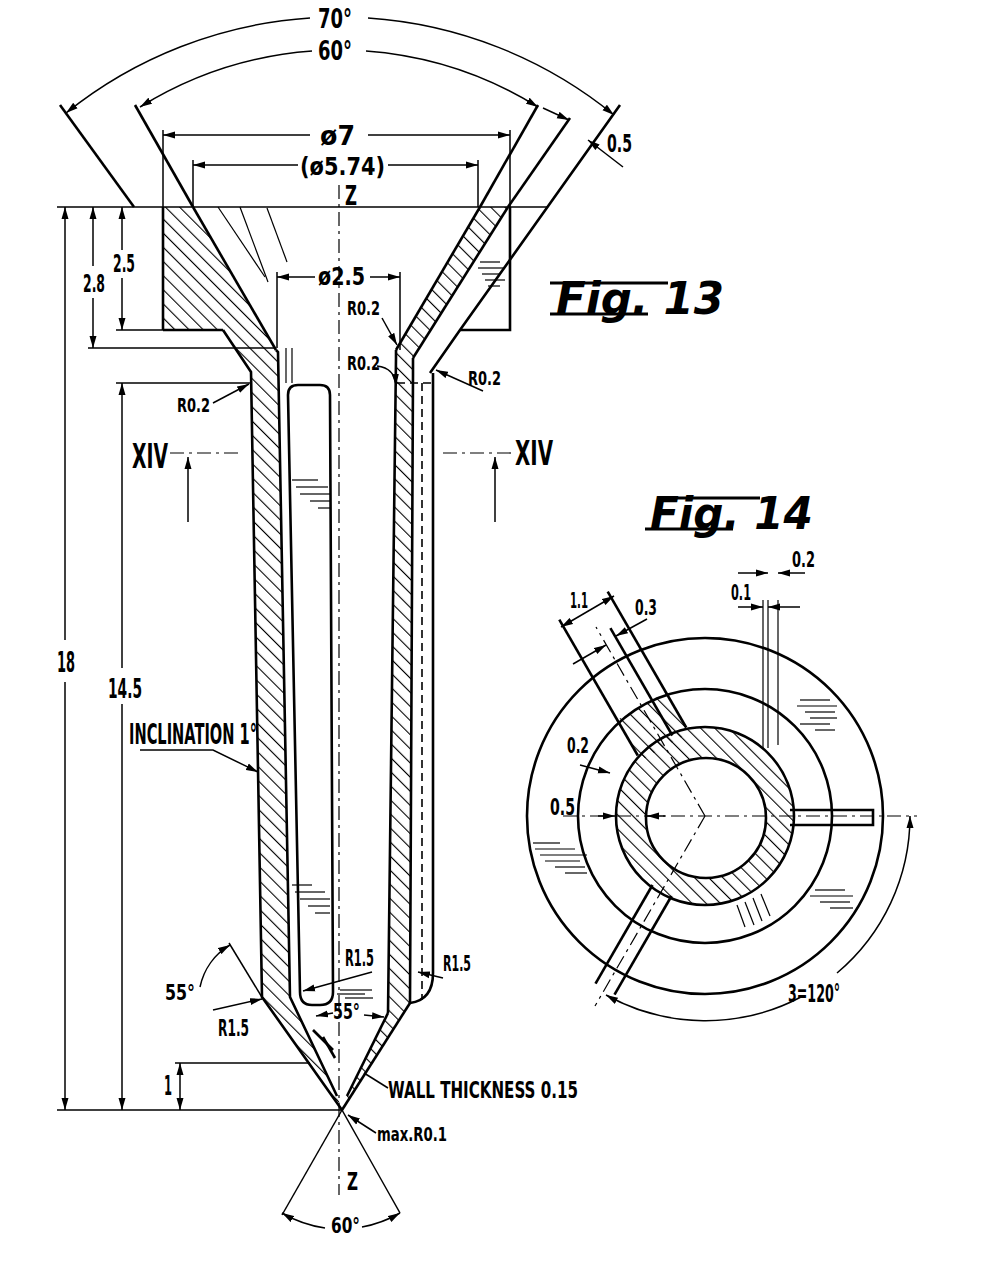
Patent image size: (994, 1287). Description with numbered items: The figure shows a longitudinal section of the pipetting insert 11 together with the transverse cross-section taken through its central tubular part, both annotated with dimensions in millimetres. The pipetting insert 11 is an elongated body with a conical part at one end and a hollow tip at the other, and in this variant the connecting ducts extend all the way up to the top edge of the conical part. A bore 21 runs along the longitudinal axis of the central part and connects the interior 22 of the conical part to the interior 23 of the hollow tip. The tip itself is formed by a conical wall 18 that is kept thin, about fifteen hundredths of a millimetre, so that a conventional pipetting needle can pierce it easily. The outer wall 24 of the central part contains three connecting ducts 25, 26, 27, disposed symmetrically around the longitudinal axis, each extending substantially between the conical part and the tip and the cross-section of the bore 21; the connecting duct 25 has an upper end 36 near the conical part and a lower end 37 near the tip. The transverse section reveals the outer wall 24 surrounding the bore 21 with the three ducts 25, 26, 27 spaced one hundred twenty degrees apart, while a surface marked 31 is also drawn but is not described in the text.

In FIG. 13, the pipette tip body 11 is at (240, 620).
In FIG. 14, the pipette tip body 11 is at (577, 952).
In FIG. 13, the conical tip wall 18 is at (392, 1038).
In FIG. 13, the inner bore 21 is at (392, 654).
In FIG. 14, the inner bore 21 is at (706, 775).
In FIG. 13, the flange 22 is at (398, 222).
In FIG. 13, the outlet opening 23 is at (322, 1062).
In FIG. 13, the tube wall 24 is at (405, 710).
In FIG. 14, the tube wall 24 is at (637, 863).
In FIG. 13, the longitudinal rib 25 is at (436, 612).
In FIG. 14, the longitudinal rib 25 is at (822, 806).
In FIG. 14, the longitudinal rib 26 is at (630, 706).
In FIG. 14, the longitudinal rib 27 is at (637, 952).
In FIG. 13, the conical surface 31 is at (447, 272).
In FIG. 14, the conical surface 31 is at (720, 933).
In FIG. 13, the conical wall 36 is at (510, 220).
In FIG. 13, the shoulder 37 is at (414, 1004).